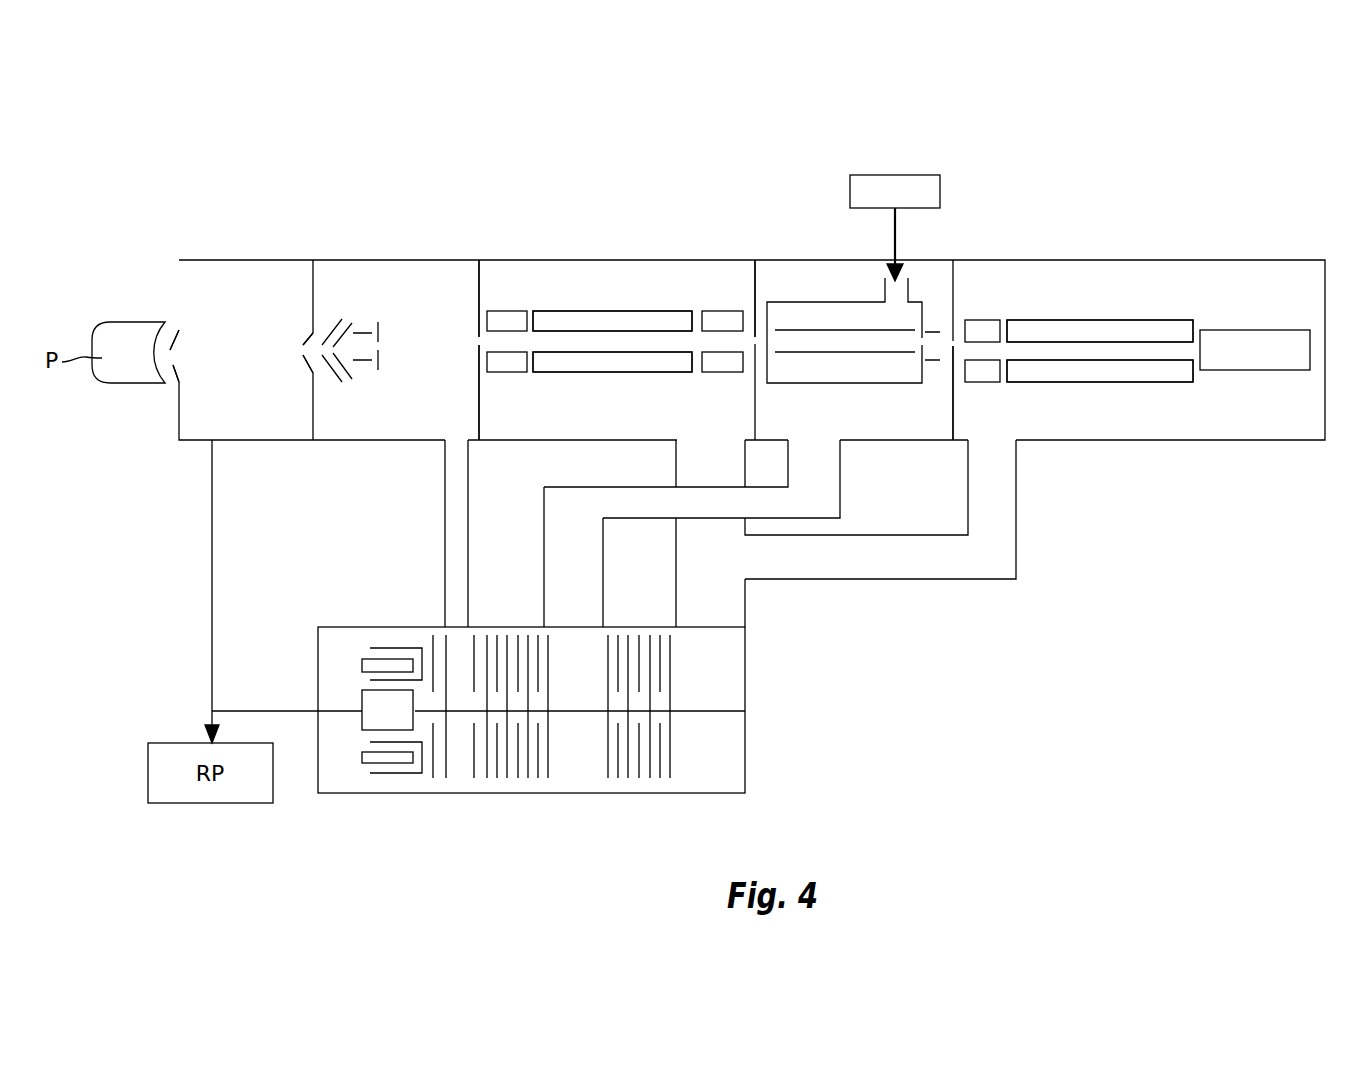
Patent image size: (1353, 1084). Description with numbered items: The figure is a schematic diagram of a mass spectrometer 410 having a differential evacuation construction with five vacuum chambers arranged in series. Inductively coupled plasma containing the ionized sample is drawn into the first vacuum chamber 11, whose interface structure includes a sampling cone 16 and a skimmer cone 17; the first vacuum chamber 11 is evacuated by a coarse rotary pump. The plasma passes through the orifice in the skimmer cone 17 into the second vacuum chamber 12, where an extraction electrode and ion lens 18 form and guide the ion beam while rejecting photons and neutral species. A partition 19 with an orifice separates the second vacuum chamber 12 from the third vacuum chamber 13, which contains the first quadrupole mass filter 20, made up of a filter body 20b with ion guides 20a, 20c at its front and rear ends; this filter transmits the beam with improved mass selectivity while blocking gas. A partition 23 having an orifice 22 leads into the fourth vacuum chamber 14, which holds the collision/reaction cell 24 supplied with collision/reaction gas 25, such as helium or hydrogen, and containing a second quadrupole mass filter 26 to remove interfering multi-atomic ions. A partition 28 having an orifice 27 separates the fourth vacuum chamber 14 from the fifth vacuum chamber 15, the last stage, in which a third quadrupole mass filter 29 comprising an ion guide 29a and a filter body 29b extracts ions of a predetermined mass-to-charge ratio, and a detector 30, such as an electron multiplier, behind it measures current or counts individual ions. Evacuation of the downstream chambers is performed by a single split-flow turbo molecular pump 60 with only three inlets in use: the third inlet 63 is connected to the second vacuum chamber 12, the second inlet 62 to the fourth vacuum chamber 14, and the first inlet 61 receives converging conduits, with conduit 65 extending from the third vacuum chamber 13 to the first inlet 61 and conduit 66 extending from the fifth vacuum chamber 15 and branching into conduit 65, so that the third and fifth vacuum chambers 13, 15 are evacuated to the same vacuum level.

The mass spectrometer 410 is at (1116, 168).
The first vacuum chamber 11 is at (280, 265).
The second vacuum chamber 12 is at (396, 265).
The third vacuum chamber 13 is at (618, 265).
The fourth vacuum chamber 14 is at (843, 265).
The fifth vacuum chamber 15 is at (1047, 265).
The sampling cone 16 is at (175, 376).
The skimmer cone 17 is at (307, 363).
The extraction electrode and ion lens 18 is at (352, 382).
The partition 19 is at (480, 288).
The first quadrupole mass filter 20 is at (617, 372).
The ion guide 20a is at (500, 373).
The filter body 20b is at (558, 373).
The ion guide 20c is at (713, 373).
The orifice 22 is at (752, 343).
The partition 23 is at (755, 282).
The collision/reaction cell 24 is at (857, 383).
The collision/reaction gas 25 is at (896, 232).
The second quadrupole mass filter 26 is at (795, 353).
The orifice 27 is at (952, 342).
The partition 28 is at (952, 402).
The third quadrupole mass filter 29 is at (1097, 327).
The ion guide 29a is at (987, 382).
The filter body 29b is at (1068, 382).
The detector 30 is at (1248, 335).
The split-flow turbo molecular pump 60 is at (648, 798).
The first inlet 61 is at (703, 627).
The second inlet 62 is at (573, 627).
The third inlet 63 is at (458, 627).
The conduit 65 is at (688, 472).
The conduit 66 is at (902, 568).